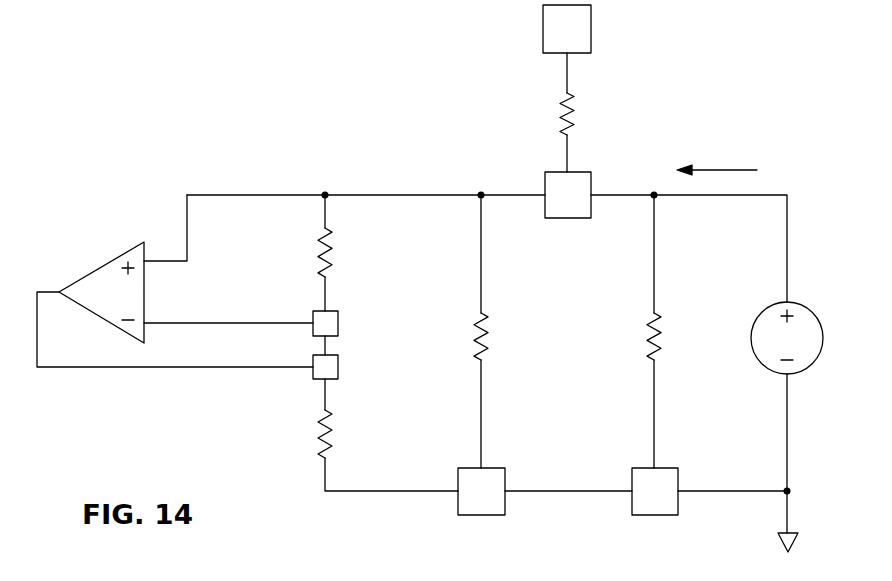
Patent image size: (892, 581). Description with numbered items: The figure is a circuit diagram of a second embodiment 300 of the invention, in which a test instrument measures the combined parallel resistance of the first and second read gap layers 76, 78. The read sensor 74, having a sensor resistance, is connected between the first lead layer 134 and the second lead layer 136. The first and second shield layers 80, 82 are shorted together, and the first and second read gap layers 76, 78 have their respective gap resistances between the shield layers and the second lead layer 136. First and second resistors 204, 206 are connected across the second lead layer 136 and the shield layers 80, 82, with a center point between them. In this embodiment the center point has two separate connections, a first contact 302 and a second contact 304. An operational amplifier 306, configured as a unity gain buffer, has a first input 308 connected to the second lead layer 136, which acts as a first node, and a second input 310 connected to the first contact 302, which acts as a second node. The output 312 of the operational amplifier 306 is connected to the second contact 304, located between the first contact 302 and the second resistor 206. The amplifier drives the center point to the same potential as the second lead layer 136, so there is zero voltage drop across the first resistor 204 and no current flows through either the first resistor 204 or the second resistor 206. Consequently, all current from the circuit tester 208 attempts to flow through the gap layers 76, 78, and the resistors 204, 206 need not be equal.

The first lead layer 134 is at (543, 23).
The read sensor 74 is at (560, 112).
The second lead layer 136 is at (545, 176).
The second embodiment 300 is at (685, 72).
The operational amplifier 306 is at (105, 262).
The first input 308 is at (144, 260).
The second input 310 is at (146, 322).
The output 312 is at (59, 290).
The first resistor 204 is at (318, 256).
The second resistor 206 is at (318, 433).
The first contact 302 is at (338, 320).
The second contact 304 is at (338, 372).
The first read gap layer 76 is at (474, 339).
The second read gap layer 78 is at (647, 339).
The first shield layer 80 is at (466, 468).
The second shield layer 82 is at (640, 468).
The circuit tester 208 is at (770, 368).